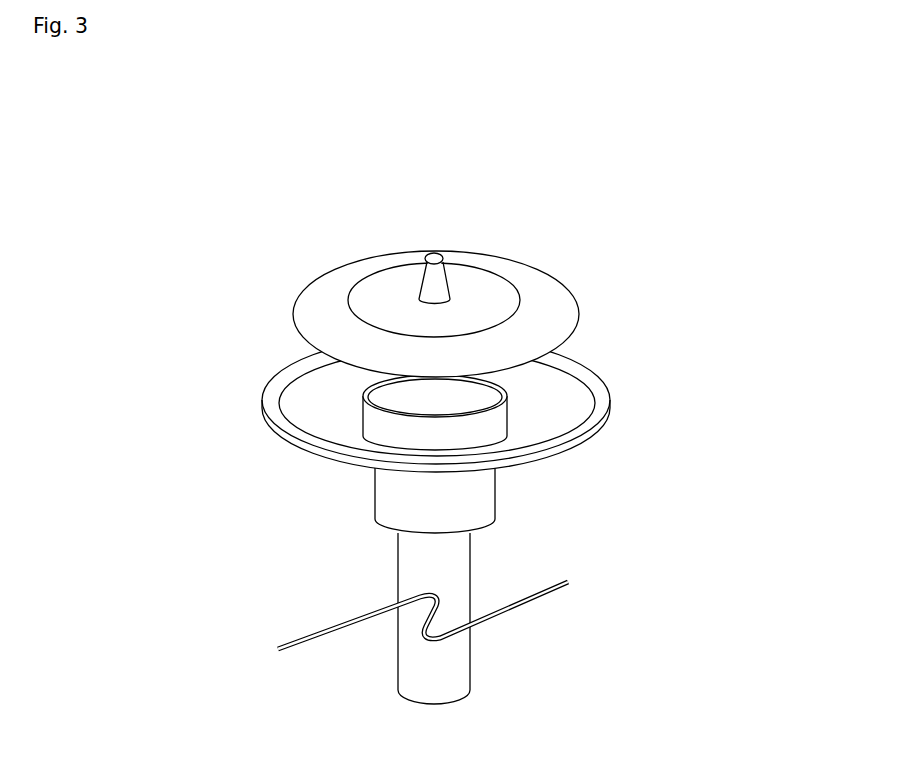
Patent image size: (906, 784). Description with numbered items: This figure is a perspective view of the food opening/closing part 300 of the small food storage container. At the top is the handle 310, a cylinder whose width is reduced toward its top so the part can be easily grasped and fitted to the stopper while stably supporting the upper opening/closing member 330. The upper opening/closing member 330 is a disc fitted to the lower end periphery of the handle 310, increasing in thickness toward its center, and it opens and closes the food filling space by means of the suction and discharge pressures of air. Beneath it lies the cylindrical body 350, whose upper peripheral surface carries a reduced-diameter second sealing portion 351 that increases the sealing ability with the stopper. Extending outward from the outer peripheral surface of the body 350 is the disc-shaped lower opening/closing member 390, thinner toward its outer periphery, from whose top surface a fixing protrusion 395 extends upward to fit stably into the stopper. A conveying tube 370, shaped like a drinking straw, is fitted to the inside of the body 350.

The food opening/closing part 300 is at (192, 182).
The handle 310 is at (437, 281).
The upper opening/closing member 330 is at (543, 313).
The second sealing portion 351 is at (388, 393).
The lower opening/closing member 390 is at (595, 400).
The fixing protrusion 395 is at (478, 425).
The body 350 is at (393, 508).
The conveying tube 370 is at (420, 570).